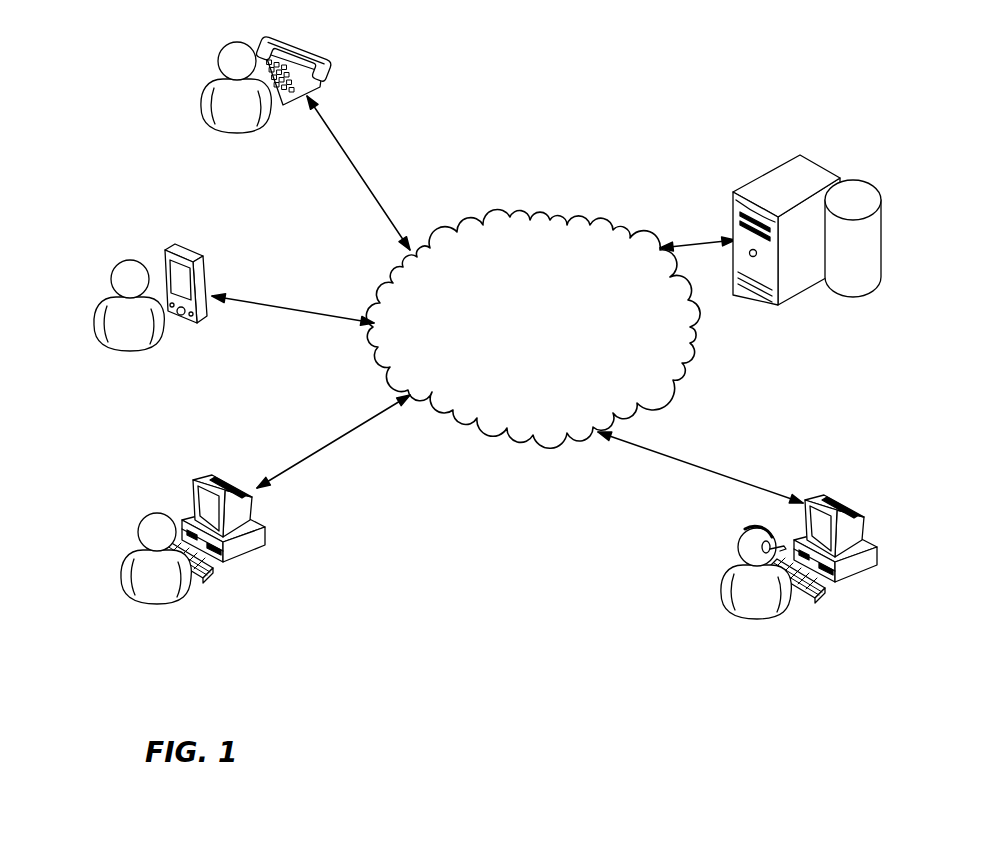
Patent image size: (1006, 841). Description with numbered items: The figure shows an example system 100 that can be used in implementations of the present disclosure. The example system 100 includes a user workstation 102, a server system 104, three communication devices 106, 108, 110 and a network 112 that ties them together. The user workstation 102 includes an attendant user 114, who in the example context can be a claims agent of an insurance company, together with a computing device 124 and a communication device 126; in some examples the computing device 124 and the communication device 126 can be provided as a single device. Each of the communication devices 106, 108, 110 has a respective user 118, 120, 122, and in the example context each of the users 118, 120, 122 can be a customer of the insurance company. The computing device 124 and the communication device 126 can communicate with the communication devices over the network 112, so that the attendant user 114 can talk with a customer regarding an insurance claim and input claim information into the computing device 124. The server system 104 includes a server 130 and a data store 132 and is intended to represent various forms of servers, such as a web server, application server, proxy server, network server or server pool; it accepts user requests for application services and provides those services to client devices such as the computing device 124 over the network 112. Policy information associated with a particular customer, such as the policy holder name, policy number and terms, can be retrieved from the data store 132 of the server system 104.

The example system 100 is at (612, 105).
The user workstation 102 is at (868, 470).
The server system 104 is at (920, 250).
The communication device 106 is at (327, 70).
The communication device 108 is at (205, 278).
The communication device 110 is at (193, 479).
The network 112 is at (512, 217).
The attendant user 114 is at (742, 617).
The user 118 is at (225, 133).
The user 120 is at (117, 350).
The user 122 is at (143, 607).
The computing device 124 is at (866, 541).
The communication device 126 is at (750, 527).
The server 130 is at (826, 163).
The data store 132 is at (880, 198).